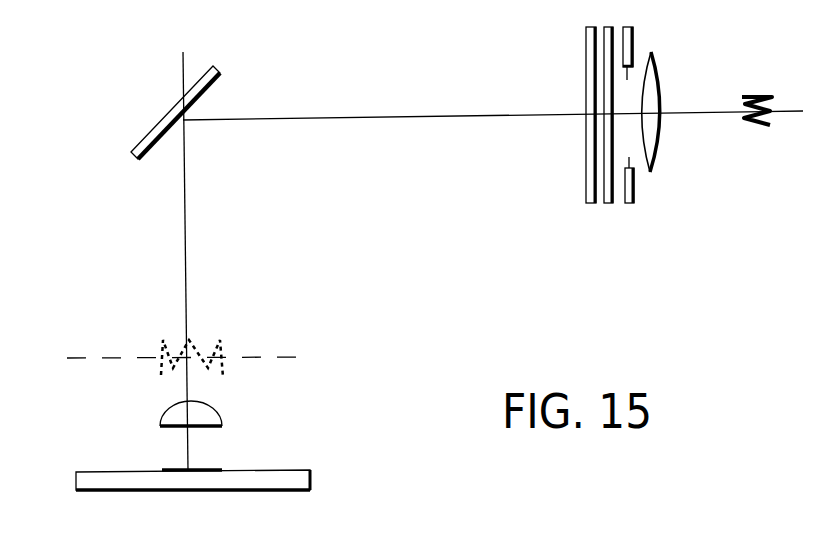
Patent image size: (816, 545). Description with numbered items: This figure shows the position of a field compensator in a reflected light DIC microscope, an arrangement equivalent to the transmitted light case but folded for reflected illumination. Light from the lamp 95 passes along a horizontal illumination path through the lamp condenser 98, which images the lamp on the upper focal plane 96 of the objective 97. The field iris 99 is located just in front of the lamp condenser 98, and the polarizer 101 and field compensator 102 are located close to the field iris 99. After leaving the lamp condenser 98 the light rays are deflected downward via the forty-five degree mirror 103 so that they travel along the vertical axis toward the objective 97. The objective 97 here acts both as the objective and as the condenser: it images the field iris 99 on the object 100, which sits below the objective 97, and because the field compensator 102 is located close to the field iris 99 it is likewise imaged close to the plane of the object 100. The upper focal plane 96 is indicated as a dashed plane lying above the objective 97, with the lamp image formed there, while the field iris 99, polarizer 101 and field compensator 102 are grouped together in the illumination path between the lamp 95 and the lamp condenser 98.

The light source filament 95 is at (753, 128).
The upper focal plane 96 is at (171, 358).
The objective 97 is at (176, 415).
The lamp condenser 98 is at (663, 92).
The field iris 99 is at (636, 190).
The object 100 is at (178, 468).
The polarizer 101 is at (608, 203).
The field compensator 102 is at (586, 191).
The 45° mirror 103 is at (212, 90).